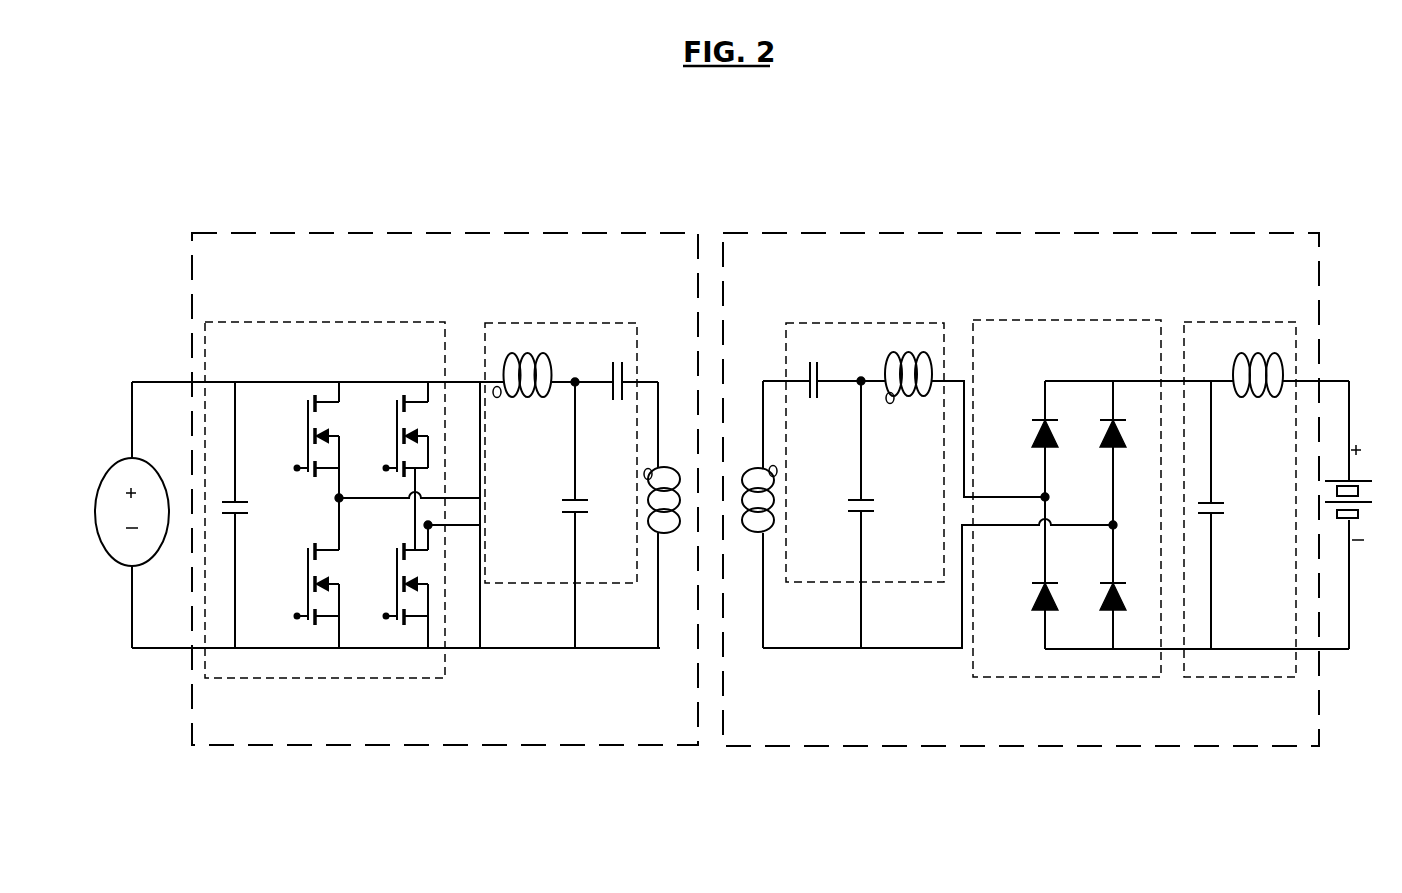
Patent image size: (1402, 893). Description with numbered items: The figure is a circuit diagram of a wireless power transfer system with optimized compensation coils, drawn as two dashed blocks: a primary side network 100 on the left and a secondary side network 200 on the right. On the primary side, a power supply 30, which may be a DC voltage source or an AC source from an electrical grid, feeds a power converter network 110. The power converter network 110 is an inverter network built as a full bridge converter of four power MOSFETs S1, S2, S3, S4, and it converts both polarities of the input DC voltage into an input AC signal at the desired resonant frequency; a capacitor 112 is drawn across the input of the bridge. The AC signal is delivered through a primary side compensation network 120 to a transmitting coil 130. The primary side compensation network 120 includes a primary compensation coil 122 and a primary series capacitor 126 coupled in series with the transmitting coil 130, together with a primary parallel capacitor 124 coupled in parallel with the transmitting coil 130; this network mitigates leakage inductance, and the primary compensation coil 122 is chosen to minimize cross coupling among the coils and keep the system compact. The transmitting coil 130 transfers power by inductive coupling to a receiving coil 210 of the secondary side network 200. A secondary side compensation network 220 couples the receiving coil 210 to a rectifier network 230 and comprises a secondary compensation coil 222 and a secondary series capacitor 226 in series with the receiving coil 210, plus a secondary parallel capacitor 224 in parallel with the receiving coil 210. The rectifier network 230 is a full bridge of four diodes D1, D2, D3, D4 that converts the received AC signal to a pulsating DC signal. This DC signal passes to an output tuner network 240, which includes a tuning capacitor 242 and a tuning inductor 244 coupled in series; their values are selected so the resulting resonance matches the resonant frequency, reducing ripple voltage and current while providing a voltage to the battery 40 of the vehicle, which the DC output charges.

The power supply 30 is at (112, 462).
The battery 40 is at (1351, 481).
The primary side network 100 is at (342, 220).
The power converter network 110 is at (253, 320).
The input capacitor 112 is at (240, 503).
The primary side compensation network 120 is at (570, 320).
The primary compensation coil 122 is at (518, 395).
The primary parallel capacitor 124 is at (570, 515).
The primary series capacitor 126 is at (613, 377).
The transmitting coil 130 is at (664, 465).
The secondary side network 200 is at (1098, 228).
The receiving coil 210 is at (758, 468).
The secondary side compensation network 220 is at (825, 320).
The secondary compensation coil 222 is at (915, 395).
The secondary parallel capacitor 224 is at (863, 515).
The secondary series capacitor 226 is at (817, 377).
The rectifier network 230 is at (1067, 313).
The output tuner network 240 is at (1232, 317).
The tuning capacitor 242 is at (1216, 515).
The tuning inductor 244 is at (1262, 397).
The power MOSFET S1 is at (308, 427).
The power MOSFET S2 is at (310, 577).
The power MOSFET S3 is at (397, 425).
The power MOSFET S4 is at (395, 572).
The diode D1 is at (1035, 435).
The diode D2 is at (1035, 600).
The diode D3 is at (1105, 445).
The diode D4 is at (1107, 610).